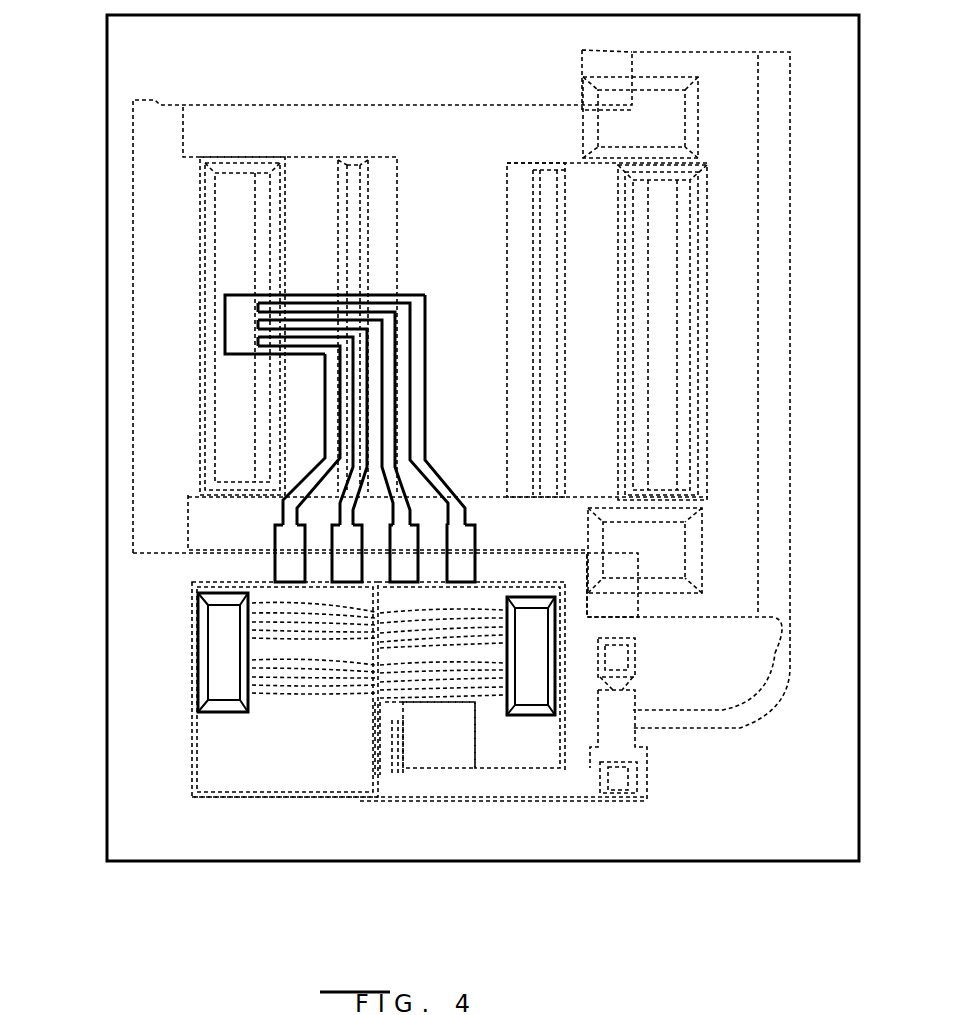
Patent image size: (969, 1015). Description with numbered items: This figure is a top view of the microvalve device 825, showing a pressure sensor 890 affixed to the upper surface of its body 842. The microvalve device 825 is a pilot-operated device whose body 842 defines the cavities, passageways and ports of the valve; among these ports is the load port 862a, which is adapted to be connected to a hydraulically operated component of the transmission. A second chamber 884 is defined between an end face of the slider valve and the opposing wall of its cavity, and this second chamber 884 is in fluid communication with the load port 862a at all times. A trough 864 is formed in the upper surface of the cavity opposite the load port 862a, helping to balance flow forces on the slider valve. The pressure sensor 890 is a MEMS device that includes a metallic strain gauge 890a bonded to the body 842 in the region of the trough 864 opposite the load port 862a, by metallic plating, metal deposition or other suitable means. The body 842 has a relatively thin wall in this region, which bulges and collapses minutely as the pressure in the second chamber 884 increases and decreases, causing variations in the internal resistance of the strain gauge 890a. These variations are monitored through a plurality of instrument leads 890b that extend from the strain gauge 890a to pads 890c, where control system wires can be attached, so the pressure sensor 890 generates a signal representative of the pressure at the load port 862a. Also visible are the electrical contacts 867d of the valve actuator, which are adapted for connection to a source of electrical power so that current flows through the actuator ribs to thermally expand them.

The microvalve device 825 is at (96, 332).
The second chamber 884 is at (168, 219).
The trough 864 is at (216, 185).
The load port 862a is at (212, 405).
The pressure sensor 890 is at (332, 422).
The metallic strain gauge 890a is at (233, 315).
The instrument leads 890b is at (467, 392).
The pads 890c is at (290, 540).
The body 842 is at (125, 626).
The electrical contacts 867d is at (222, 658).